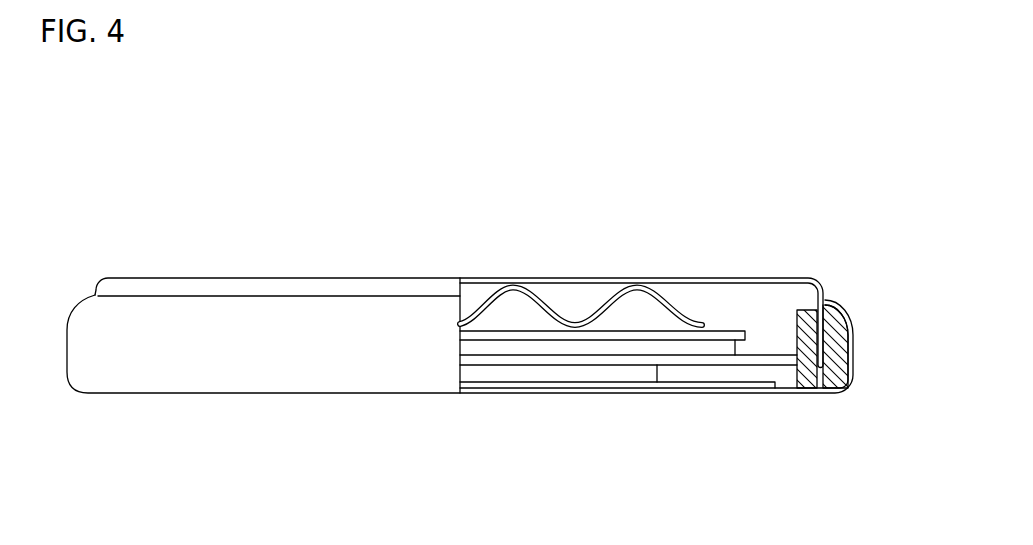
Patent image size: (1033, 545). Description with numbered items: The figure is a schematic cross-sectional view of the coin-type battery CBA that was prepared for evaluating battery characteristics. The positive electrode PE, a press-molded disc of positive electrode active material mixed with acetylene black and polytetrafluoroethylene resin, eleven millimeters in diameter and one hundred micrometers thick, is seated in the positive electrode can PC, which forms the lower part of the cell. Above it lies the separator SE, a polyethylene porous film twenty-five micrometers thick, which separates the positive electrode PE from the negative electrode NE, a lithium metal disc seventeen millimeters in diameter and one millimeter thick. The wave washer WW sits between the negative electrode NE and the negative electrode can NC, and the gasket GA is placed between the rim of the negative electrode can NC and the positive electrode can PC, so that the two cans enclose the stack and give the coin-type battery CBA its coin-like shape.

The coin-type battery CBA is at (499, 309).
The negative electrode can NC is at (560, 278).
The wave washer WW is at (682, 303).
The negative electrode NE is at (771, 350).
The separator SE is at (800, 312).
The gasket GA is at (855, 337).
The positive electrode can PC is at (560, 394).
The positive electrode PE is at (603, 383).